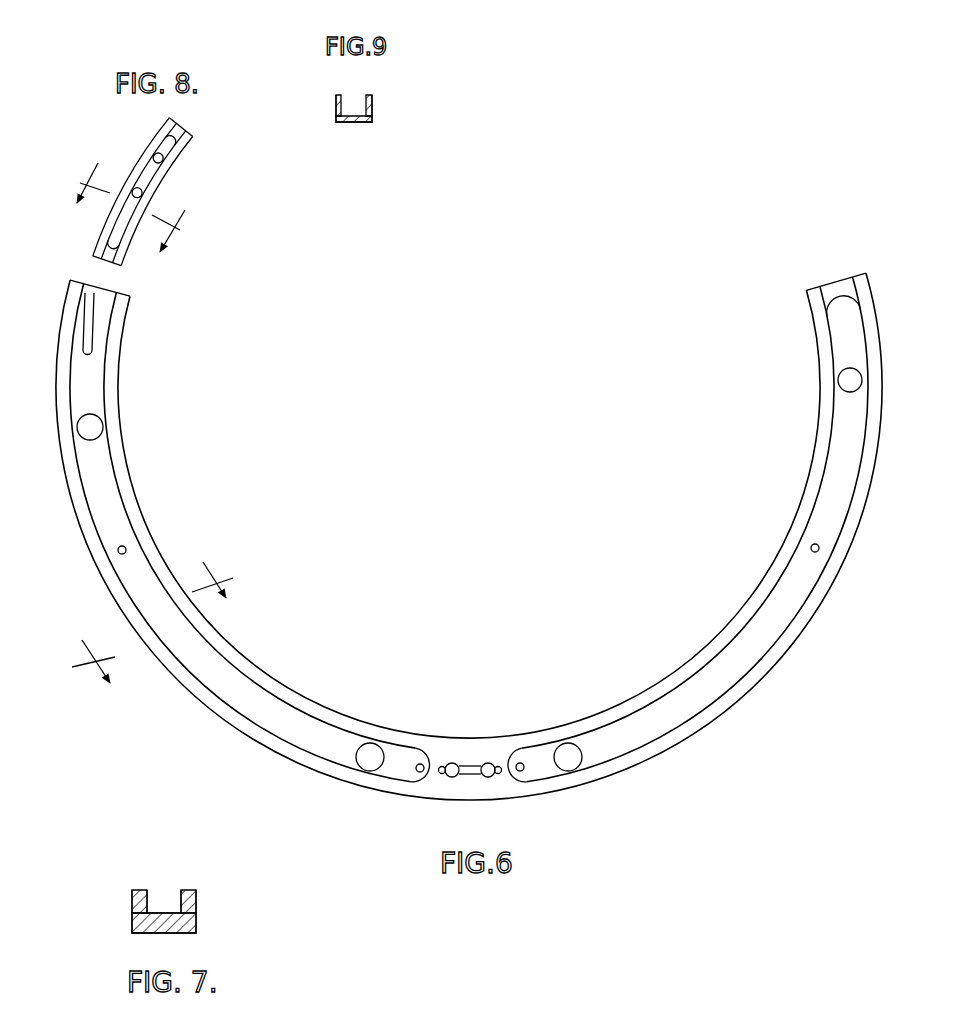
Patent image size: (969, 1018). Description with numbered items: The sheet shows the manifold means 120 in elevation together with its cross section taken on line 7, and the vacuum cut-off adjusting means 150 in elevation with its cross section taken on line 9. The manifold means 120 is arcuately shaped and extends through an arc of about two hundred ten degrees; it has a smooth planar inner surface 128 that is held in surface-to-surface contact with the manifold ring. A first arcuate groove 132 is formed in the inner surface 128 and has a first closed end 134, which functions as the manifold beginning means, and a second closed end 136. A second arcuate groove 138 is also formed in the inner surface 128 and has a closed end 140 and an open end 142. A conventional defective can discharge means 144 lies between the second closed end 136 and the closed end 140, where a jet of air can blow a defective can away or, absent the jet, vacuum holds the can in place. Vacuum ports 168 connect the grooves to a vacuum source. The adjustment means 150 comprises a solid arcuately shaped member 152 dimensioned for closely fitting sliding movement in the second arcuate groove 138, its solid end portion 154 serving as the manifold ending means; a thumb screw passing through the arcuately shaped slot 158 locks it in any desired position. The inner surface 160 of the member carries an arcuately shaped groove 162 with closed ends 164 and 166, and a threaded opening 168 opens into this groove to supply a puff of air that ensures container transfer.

In FIG. 6, the manifold means 120 is at (786, 689).
In FIG. 6, the inner surface 128 is at (75, 493).
In FIG. 7, the inner surface 128 is at (140, 888).
In FIG. 6, the first arcuate groove 132 is at (832, 488).
In FIG. 6, the first closed end 134 is at (838, 300).
In FIG. 6, the second closed end 136 is at (520, 762).
In FIG. 6, the second arcuate groove 138 is at (107, 535).
In FIG. 7, the second arcuate groove 138 is at (165, 893).
In FIG. 6, the closed end 140 is at (420, 760).
In FIG. 6, the open end 142 is at (112, 288).
In FIG. 6, the defective can discharge means 144 is at (470, 762).
In FIG. 8, the adjustment means 150 is at (202, 143).
In FIG. 8, the arcuately shaped member 152 is at (157, 182).
In FIG. 9, the arcuately shaped member 152 is at (375, 118).
In FIG. 8, the solid end portion 154 is at (112, 265).
In FIG. 6, the arcuately shaped slot 158 is at (88, 320).
In FIG. 8, the inner surface 160 is at (100, 247).
In FIG. 9, the inner surface 160 is at (370, 95).
In FIG. 9, the arcuately shaped groove 162 is at (357, 97).
In FIG. 8, the closed end 164 is at (110, 224).
In FIG. 8, the closed end 166 is at (163, 140).
In FIG. 6, the threaded opening 168 is at (97, 423).
In FIG. 8, the threaded opening 168 is at (162, 160).
In FIG. 6, the section line 7— 7 is at (147, 608).
In FIG. 8, the section line 9— 9 is at (139, 194).